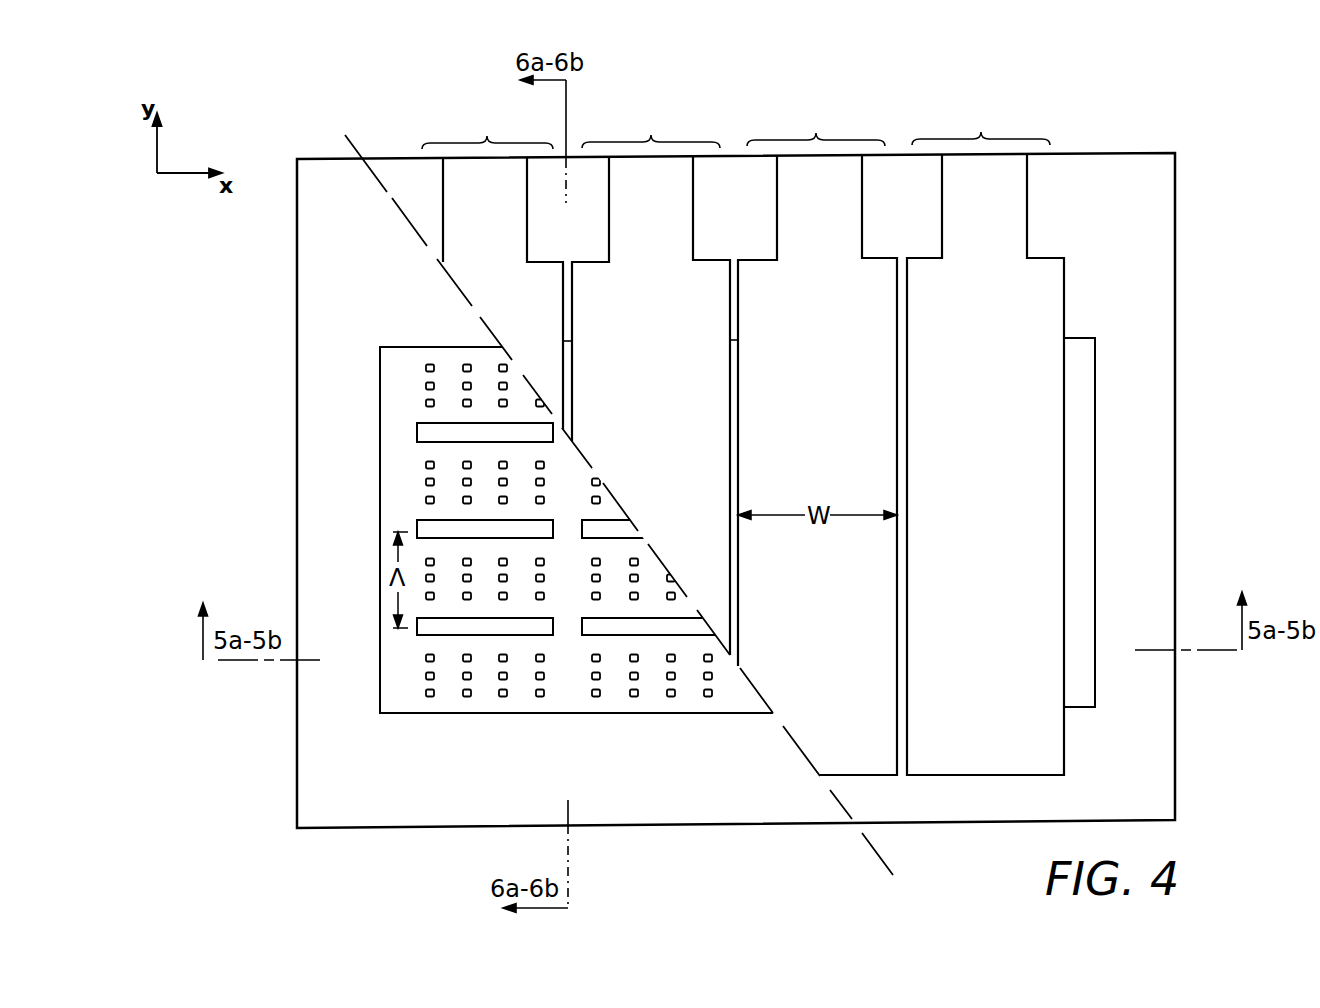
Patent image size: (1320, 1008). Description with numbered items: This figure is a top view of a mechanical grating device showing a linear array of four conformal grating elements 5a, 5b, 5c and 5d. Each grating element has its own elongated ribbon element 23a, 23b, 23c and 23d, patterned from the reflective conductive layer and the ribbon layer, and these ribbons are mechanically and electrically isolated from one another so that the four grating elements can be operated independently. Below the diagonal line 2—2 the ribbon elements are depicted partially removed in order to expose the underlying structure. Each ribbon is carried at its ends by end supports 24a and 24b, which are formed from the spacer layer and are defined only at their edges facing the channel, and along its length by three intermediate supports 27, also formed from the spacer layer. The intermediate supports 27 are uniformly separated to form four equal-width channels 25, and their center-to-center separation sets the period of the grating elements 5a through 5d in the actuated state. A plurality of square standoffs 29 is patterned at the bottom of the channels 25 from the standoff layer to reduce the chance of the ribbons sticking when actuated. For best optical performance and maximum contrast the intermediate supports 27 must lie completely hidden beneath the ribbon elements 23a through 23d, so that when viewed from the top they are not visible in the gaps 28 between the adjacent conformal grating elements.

The line 2— 2 is at (621, 505).
The conformal grating element 5a is at (487, 126).
The conformal grating element 5b is at (651, 125).
The conformal grating element 5c is at (816, 122).
The conformal grating element 5d is at (981, 121).
The elongated ribbon element 23a is at (502, 228).
The elongated ribbon element 23b is at (669, 228).
The elongated ribbon element 23c is at (837, 223).
The elongated ribbon element 23d is at (1004, 223).
The end support 24a is at (1078, 322).
The end support 24b is at (1078, 727).
The channel 25 is at (400, 386).
The intermediate support 27 is at (415, 433).
The gap 28 is at (735, 358).
The square standoff 29 is at (467, 697).